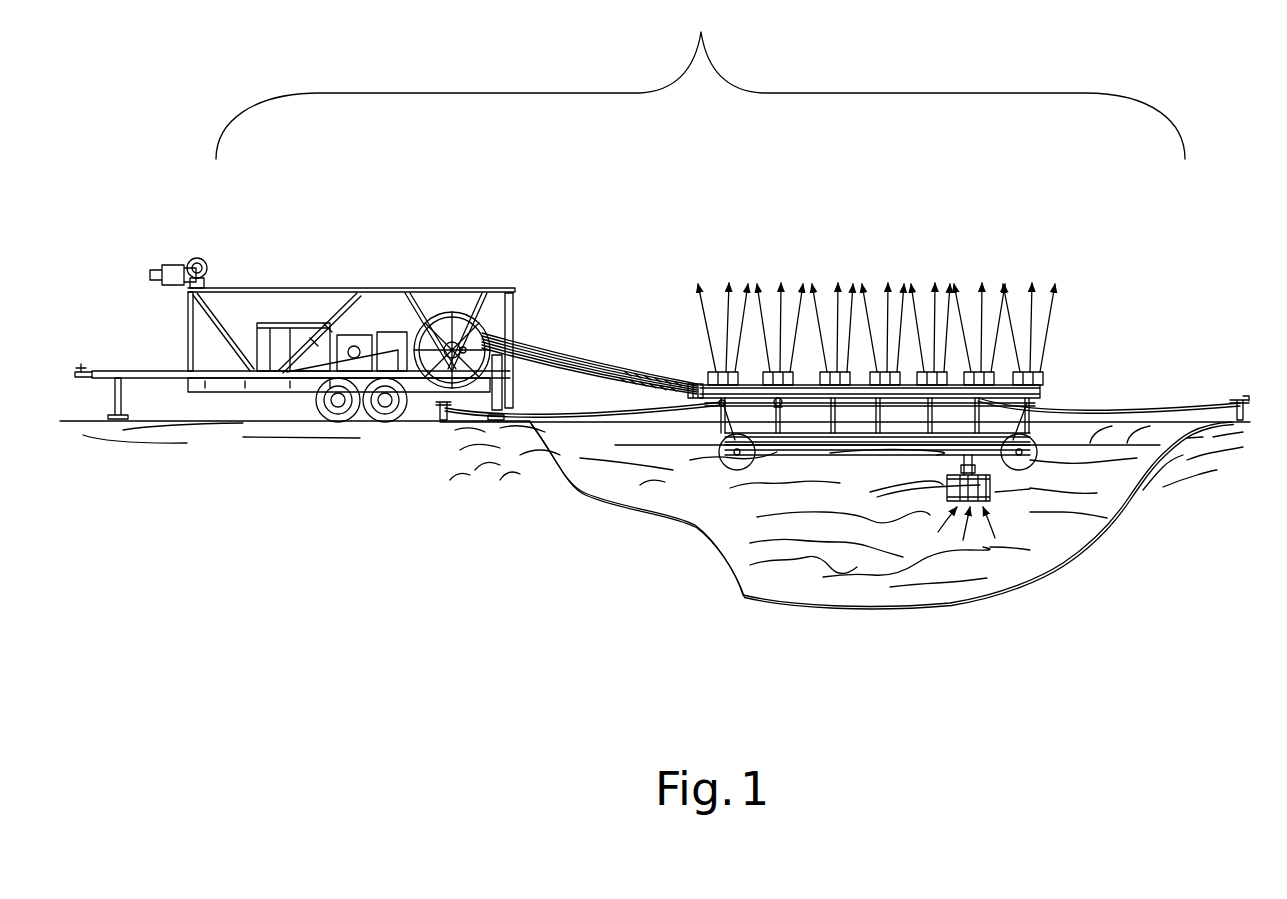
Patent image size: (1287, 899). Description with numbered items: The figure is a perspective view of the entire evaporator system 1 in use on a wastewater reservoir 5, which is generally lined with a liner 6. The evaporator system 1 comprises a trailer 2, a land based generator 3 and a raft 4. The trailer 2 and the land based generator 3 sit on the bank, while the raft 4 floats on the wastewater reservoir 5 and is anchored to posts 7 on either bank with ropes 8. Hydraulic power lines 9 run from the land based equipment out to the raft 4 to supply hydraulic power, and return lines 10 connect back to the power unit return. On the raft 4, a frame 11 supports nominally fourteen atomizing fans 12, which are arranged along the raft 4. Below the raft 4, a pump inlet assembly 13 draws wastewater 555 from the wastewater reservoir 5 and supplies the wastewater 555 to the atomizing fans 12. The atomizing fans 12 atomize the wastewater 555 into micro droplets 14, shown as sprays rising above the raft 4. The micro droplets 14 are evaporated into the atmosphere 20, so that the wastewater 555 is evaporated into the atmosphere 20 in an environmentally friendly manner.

The evaporator system 1 is at (700, 81).
The atmosphere 20 is at (949, 52).
The trailer 2 is at (145, 368).
The land based generator 3 is at (383, 335).
The raft 4 is at (1005, 453).
The wastewater reservoir 5 is at (1085, 500).
The liner 6 is at (1065, 563).
The posts 7 is at (442, 420).
The ropes 8 is at (587, 424).
The hydraulic power lines 9 is at (612, 380).
The return lines 10 is at (572, 362).
The frame 11 is at (778, 408).
The atomizing fans 12 is at (834, 378).
The pump inlet assembly 13 is at (950, 488).
The micro droplets 14 is at (732, 300).
The wastewater 555 is at (947, 540).